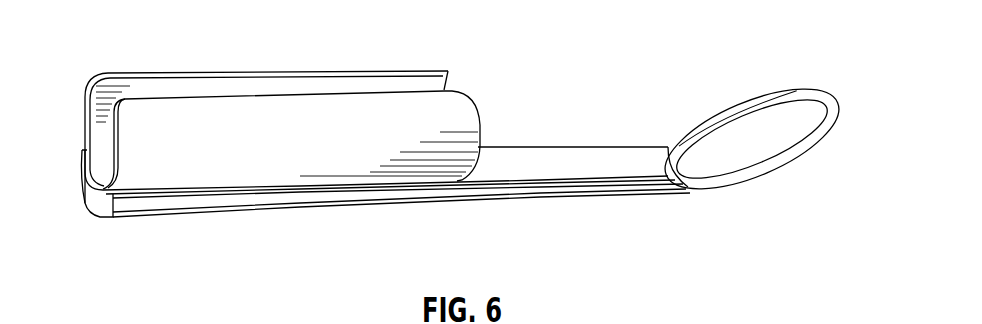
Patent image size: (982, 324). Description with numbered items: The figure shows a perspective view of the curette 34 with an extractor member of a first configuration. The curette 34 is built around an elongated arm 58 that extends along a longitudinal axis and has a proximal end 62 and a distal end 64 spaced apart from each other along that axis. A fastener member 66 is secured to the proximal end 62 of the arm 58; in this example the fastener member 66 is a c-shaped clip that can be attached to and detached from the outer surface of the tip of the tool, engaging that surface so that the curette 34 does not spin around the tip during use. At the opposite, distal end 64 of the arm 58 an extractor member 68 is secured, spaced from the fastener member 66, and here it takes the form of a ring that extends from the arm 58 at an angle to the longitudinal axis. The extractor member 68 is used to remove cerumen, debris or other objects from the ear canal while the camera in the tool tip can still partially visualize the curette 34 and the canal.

The curette 34 is at (842, 34).
The arm 58 is at (562, 188).
The proximal end 62 is at (92, 197).
The distal end 64 is at (682, 186).
The fastener member 66 is at (467, 113).
The extractor member 68 is at (833, 97).